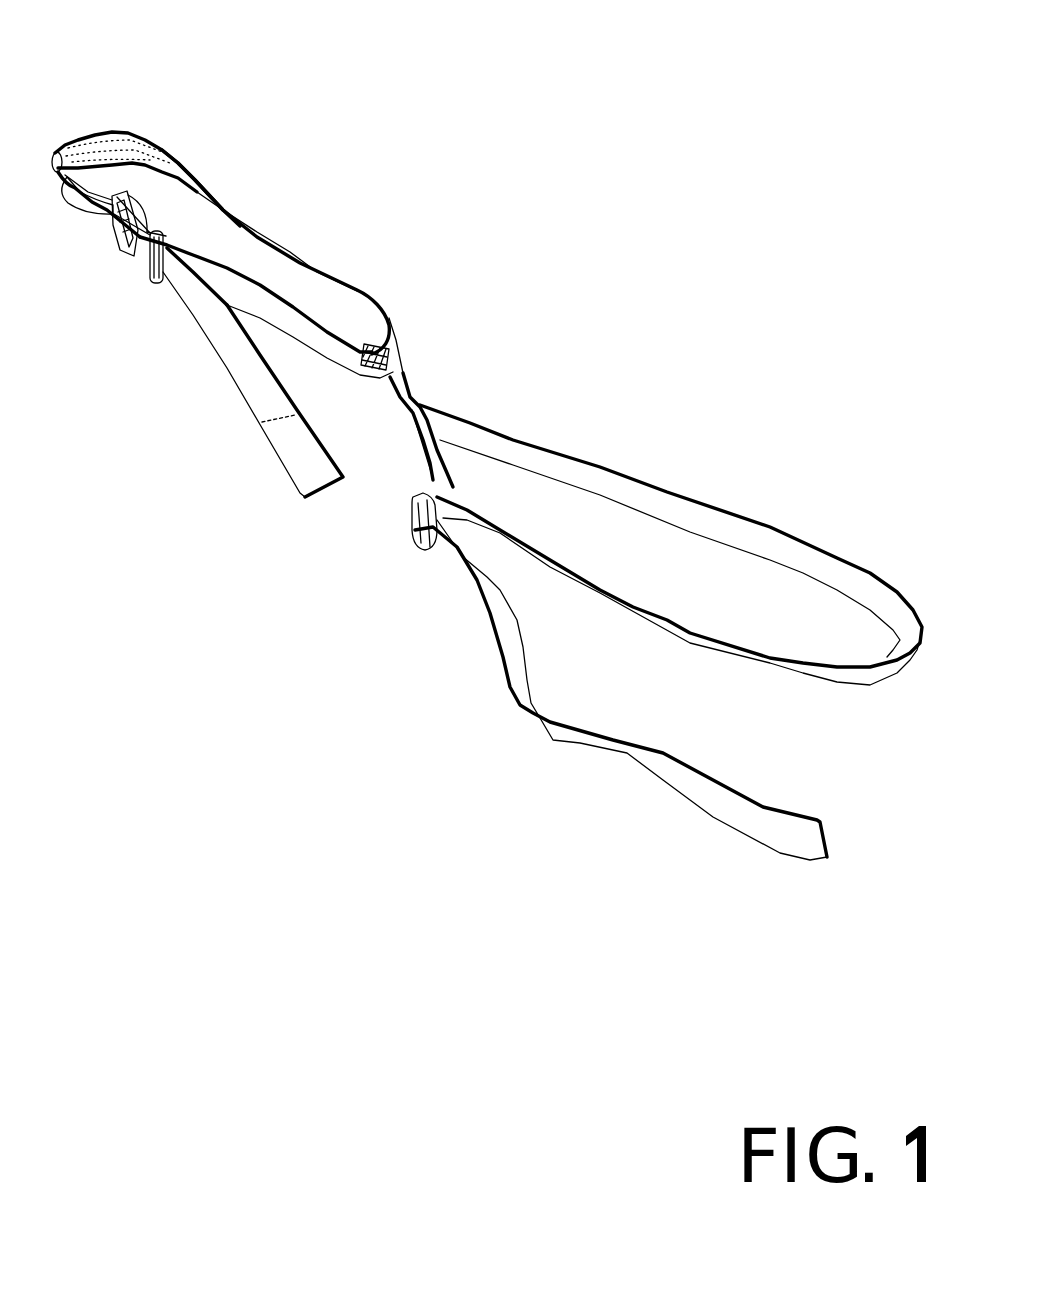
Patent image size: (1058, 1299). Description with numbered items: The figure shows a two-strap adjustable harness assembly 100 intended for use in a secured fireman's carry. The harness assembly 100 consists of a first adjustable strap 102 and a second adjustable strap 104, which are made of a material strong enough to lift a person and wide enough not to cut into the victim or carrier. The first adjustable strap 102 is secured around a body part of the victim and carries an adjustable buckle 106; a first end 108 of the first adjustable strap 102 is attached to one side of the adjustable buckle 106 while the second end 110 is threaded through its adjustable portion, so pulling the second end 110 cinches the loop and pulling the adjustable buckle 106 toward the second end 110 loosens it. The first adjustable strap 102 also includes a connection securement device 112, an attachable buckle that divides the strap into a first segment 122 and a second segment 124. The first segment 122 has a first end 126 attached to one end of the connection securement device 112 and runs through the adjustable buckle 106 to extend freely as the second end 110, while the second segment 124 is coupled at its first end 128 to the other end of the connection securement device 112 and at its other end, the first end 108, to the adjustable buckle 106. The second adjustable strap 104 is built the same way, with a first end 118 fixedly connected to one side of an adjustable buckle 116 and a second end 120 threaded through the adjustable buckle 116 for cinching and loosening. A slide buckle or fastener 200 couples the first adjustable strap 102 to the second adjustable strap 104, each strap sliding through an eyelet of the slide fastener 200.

The harness assembly 100 is at (249, 35).
The first adjustable strap 102 is at (240, 231).
The second adjustable strap 104 is at (633, 493).
The adjustable buckle 106 is at (119, 248).
The first end of the first adjustable strap 108 is at (126, 246).
The second end of the first adjustable strap 110 is at (317, 488).
The connection securement device 112 is at (60, 158).
The adjustable buckle 116 is at (415, 528).
The first end of the second adjustable strap 118 is at (430, 482).
The second end of the second adjustable strap 120 is at (805, 856).
The first segment 122 is at (193, 191).
The second segment 124 is at (117, 236).
The first end of segment 126 is at (104, 164).
The first end of the second segment 128 is at (92, 200).
The slide buckle or fastener 200 is at (378, 353).